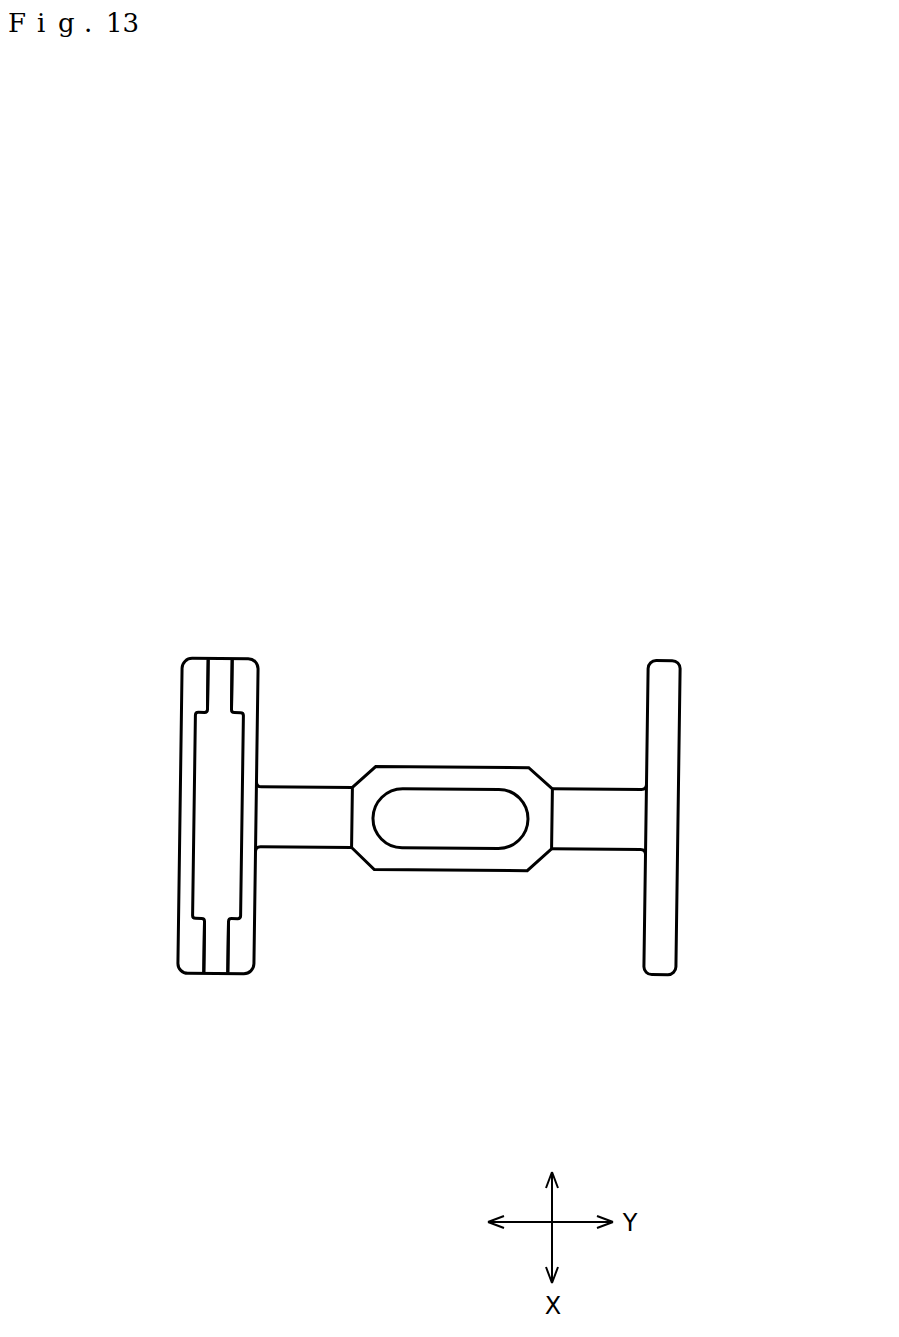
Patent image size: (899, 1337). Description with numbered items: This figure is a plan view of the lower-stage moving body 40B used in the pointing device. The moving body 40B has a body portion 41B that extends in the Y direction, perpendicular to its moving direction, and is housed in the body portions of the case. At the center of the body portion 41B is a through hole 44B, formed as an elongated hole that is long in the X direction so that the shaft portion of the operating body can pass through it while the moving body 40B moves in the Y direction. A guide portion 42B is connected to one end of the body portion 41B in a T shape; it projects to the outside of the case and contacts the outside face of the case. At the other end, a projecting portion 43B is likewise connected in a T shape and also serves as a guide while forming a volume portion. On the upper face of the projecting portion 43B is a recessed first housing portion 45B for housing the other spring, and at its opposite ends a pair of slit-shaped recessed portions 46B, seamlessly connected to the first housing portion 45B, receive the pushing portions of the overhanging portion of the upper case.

The moving body 40B is at (518, 677).
The body portion 41B is at (590, 849).
The guide portion 42B is at (680, 728).
The projecting portion 43B is at (182, 755).
The through hole 44B is at (455, 832).
The first housing portion 45B is at (228, 730).
The slit-shaped recessed portions 46B is at (220, 667).